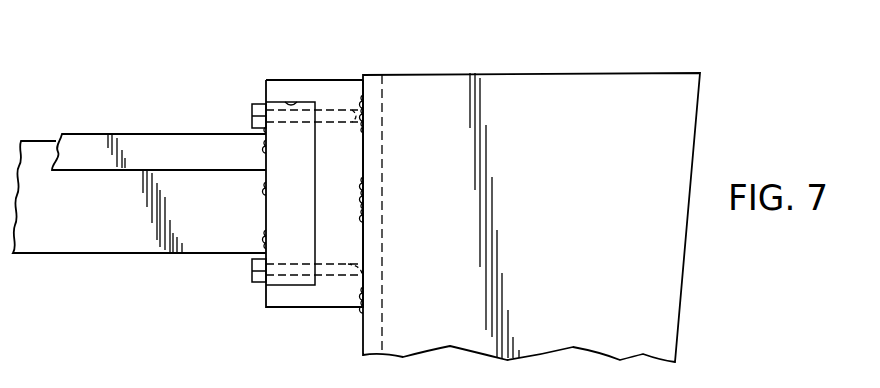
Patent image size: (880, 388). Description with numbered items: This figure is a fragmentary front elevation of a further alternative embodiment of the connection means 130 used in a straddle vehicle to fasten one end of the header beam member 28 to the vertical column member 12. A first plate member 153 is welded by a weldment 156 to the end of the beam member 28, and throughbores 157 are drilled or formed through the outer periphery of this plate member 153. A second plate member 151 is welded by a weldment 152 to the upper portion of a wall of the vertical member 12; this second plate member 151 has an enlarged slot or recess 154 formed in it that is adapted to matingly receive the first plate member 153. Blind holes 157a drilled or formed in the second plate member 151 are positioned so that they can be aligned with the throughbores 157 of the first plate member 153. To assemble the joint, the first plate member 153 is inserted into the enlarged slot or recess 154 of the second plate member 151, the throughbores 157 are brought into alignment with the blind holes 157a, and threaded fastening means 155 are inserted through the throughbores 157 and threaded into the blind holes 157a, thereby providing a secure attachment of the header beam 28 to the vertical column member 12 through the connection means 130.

The vertical column member 12 is at (568, 218).
The header beam member 28 is at (77, 216).
The connection means 130 is at (317, 53).
The second plate member 151 is at (346, 228).
The weldment 152 is at (362, 175).
The first plate member 153 is at (281, 208).
The enlarged slot or recess 154 is at (300, 101).
The threaded fastening means 155 is at (258, 283).
The weldment 156 is at (262, 242).
The throughbores 157 is at (283, 277).
The blind holes 157a is at (383, 264).